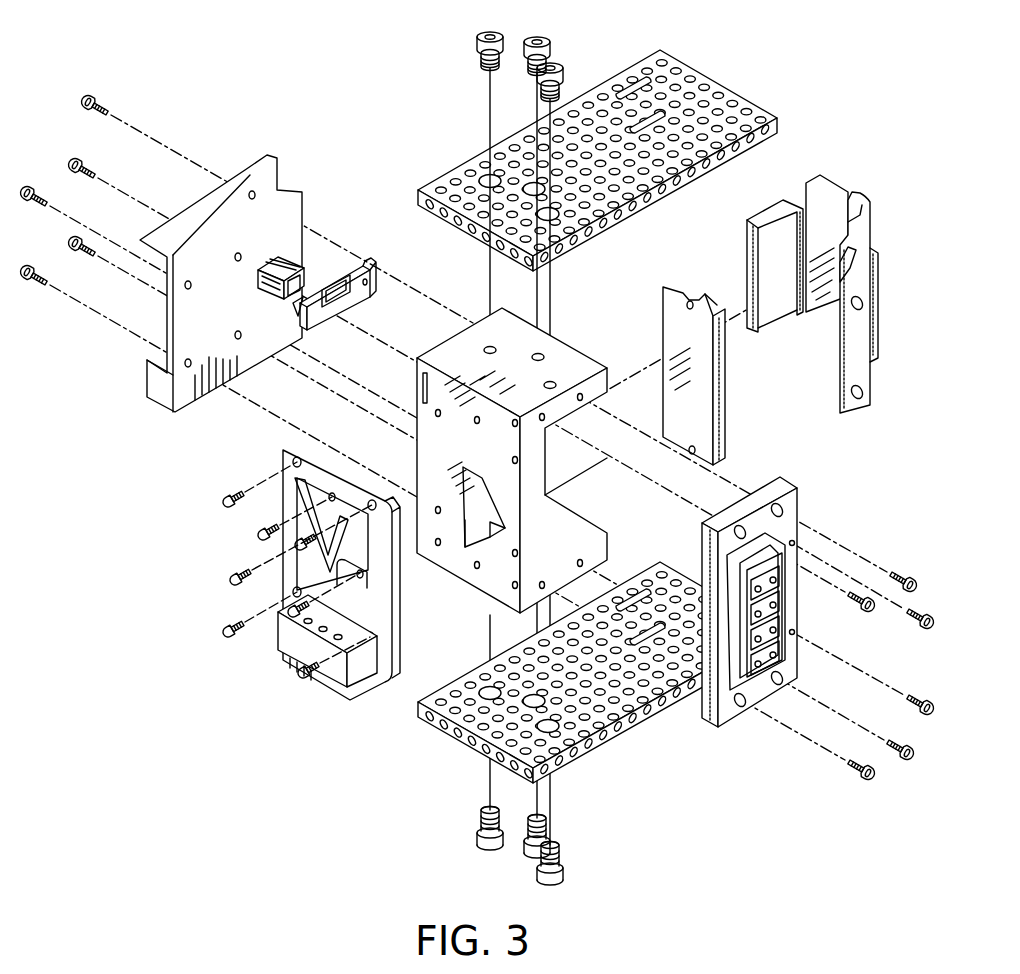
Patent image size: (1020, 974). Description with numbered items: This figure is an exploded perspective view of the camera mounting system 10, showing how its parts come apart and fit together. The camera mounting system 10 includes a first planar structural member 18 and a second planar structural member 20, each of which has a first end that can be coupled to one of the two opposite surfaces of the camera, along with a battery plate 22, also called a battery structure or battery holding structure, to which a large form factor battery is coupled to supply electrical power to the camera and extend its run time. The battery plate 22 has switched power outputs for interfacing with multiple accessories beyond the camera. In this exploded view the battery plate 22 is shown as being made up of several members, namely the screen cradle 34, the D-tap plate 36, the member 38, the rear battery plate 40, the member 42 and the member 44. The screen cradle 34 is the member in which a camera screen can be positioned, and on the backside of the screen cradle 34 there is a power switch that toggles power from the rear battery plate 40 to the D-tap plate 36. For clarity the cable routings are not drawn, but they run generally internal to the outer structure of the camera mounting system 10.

The camera mounting system 10 is at (477, 451).
The first planar structural member 18 is at (620, 742).
The second planar structural member 20 is at (653, 210).
The battery plate 22 is at (176, 651).
The screen cradle 34 is at (158, 403).
The D-tap plate 36 is at (802, 500).
The member 38 is at (377, 680).
The rear battery plate 40 is at (480, 590).
The member 42 is at (727, 418).
The member 44 is at (878, 310).